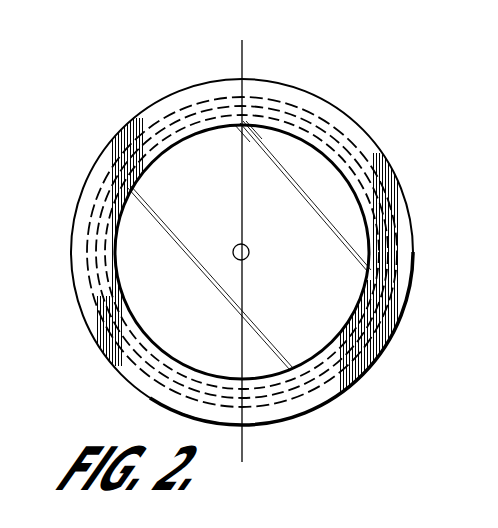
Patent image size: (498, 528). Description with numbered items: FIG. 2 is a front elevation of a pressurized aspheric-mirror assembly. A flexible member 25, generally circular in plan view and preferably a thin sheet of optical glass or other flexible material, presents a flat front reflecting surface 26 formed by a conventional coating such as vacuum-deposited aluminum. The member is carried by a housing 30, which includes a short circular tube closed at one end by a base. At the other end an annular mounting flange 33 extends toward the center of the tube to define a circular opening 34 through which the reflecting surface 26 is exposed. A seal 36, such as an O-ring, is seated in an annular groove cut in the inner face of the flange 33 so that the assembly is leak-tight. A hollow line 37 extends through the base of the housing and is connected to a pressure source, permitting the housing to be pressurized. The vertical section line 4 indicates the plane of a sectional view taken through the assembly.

The section line 4- 4 is at (248, 40).
The flexible member 25 is at (396, 163).
The front reflecting surface 26 is at (301, 291).
The housing 30 is at (122, 113).
The annular mounting flange 33 is at (333, 111).
The circular opening 34 is at (346, 333).
The seal 36 is at (100, 310).
The hollow line 37 is at (233, 256).